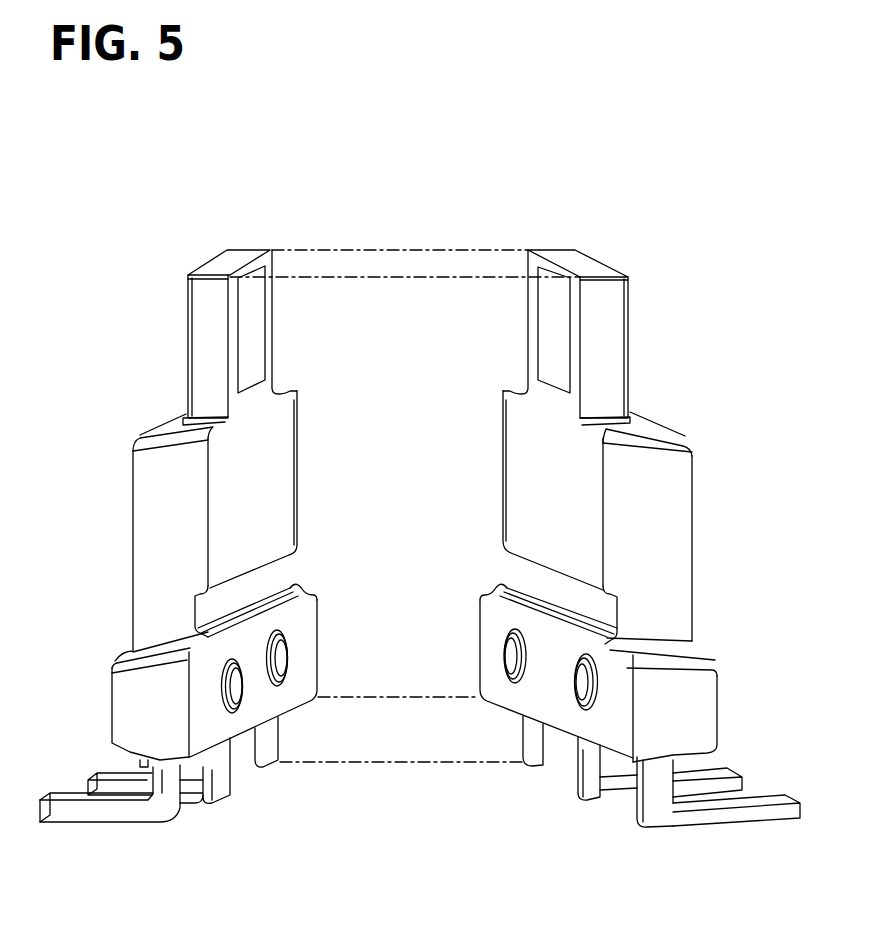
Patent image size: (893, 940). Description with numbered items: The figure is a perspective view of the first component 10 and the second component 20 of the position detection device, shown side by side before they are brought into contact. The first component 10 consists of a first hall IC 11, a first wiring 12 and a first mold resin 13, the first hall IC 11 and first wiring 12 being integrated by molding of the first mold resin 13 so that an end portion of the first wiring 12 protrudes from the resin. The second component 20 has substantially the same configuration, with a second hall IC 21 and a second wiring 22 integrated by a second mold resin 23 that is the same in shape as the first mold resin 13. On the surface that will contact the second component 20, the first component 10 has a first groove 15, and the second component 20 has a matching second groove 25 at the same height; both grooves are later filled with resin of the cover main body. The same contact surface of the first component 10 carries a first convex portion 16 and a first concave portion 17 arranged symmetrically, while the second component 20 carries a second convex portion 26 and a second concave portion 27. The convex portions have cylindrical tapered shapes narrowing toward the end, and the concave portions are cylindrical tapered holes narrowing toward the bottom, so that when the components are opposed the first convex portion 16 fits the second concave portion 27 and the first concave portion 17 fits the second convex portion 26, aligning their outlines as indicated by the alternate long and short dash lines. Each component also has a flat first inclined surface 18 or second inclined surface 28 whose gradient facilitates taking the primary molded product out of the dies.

The first component 10 is at (228, 254).
The first hall IC 11 is at (262, 300).
The first wiring 12 is at (123, 818).
The first mold resin 13 is at (165, 522).
The first groove 15 is at (272, 578).
The first convex portion 16 is at (245, 690).
The first concave portion 17 is at (280, 660).
The first inclined surface 18 is at (165, 425).
The second component 20 is at (590, 254).
The second hall IC 21 is at (548, 303).
The second wiring 22 is at (533, 768).
The second mold resin 23 is at (683, 505).
The second groove 25 is at (538, 572).
The second convex portion 26 is at (503, 655).
The second concave portion 27 is at (585, 683).
The second inclined surface 28 is at (650, 427).